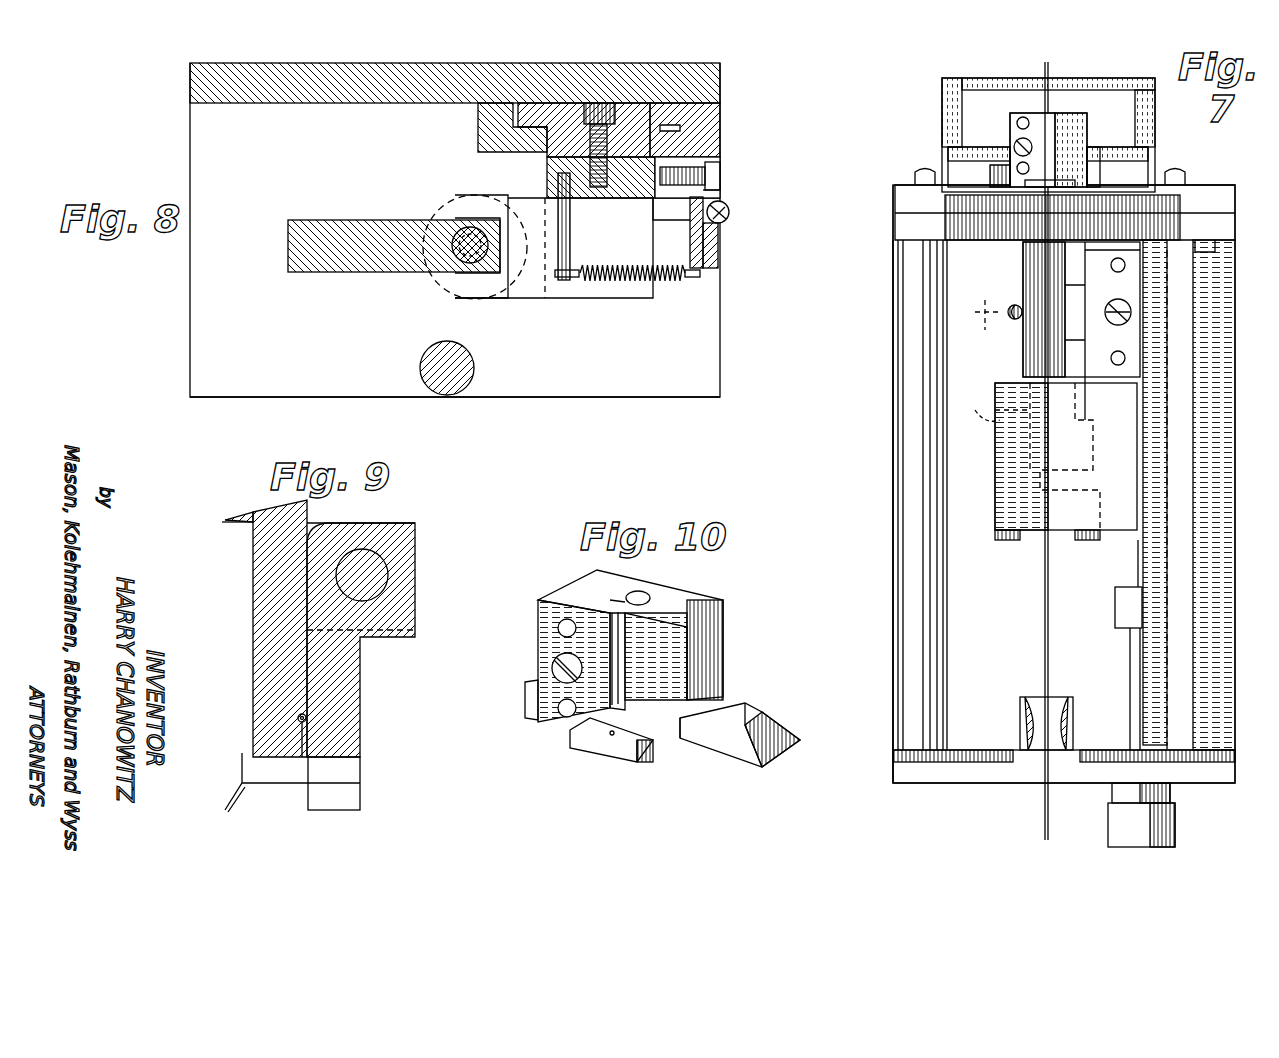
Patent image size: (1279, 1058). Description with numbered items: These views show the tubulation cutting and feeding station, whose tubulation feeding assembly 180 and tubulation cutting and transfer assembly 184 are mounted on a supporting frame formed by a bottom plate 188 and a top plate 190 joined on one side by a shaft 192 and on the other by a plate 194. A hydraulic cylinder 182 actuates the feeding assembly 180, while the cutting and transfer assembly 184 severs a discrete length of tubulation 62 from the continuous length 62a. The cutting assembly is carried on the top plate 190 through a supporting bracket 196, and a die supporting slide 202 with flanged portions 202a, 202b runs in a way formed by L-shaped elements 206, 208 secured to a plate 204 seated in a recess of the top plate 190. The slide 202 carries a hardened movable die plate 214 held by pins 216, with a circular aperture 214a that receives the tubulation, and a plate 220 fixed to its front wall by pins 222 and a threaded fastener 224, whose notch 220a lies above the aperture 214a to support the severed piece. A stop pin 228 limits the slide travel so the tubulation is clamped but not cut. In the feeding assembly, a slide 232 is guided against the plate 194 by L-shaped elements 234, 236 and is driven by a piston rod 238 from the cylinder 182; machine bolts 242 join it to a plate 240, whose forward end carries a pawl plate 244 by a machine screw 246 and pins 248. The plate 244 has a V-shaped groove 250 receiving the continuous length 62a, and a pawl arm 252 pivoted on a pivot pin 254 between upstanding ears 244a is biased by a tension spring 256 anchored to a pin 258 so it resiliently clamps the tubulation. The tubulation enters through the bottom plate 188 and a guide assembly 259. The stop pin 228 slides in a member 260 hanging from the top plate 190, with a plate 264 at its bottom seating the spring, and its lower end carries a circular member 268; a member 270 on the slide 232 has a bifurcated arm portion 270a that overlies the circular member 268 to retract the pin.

In FIG. 7, the tubulation 62 is at (1050, 68).
In FIG. 7, the continuous length of tubulation 62a is at (1045, 640).
In FIG. 9, the continuous length of tubulation 62a is at (308, 718).
In FIG. 8, the tubulation feeding assembly 180 is at (166, 330).
In FIG. 7, the tubulation feeding assembly 180 is at (878, 415).
In FIG. 7, the hydraulic cylinder 182 is at (1108, 825).
In FIG. 7, the tubulation cutting and transfer assembly 184 is at (910, 66).
In FIG. 8, the bottom plate 188 is at (545, 397).
In FIG. 7, the bottom plate 188 is at (908, 780).
In FIG. 7, the top plate 190 is at (897, 225).
In FIG. 8, the shaft 192 is at (447, 395).
In FIG. 7, the shaft 192 is at (900, 522).
In FIG. 8, the plate 194 is at (190, 76).
In FIG. 7, the plate 194 is at (1168, 375).
In FIG. 7, the supporting bracket 196 is at (975, 62).
In FIG. 7, the die supporting slide 202 is at (1083, 115).
In FIG. 10, the die supporting slide 202 is at (722, 627).
In FIG. 7, the flanged portion 202a is at (1003, 165).
In FIG. 10, the flanged portion 202a is at (525, 692).
In FIG. 7, the flanged portion 202b is at (1095, 155).
In FIG. 10, the flanged portion 202b is at (745, 712).
In FIG. 7, the plate 204 is at (950, 195).
In FIG. 7, the L-shaped element 206 is at (1148, 158).
In FIG. 7, the L-shaped element 208 is at (948, 156).
In FIG. 7, the plate 214 is at (1058, 182).
In FIG. 10, the plate 214 is at (582, 742).
In FIG. 10, the circular aperture 214a is at (612, 737).
In FIG. 10, the pins 216 is at (648, 598).
In FIG. 7, the plate 220 is at (1033, 113).
In FIG. 10, the plate 220 is at (548, 600).
In FIG. 10, the notch 220a is at (615, 612).
In FIG. 7, the pins 222 is at (1017, 123).
In FIG. 10, the pins 222 is at (558, 625).
In FIG. 7, the threaded fastener 224 is at (1014, 145).
In FIG. 10, the threaded fastener 224 is at (553, 663).
In FIG. 8, the stop pin 228 is at (456, 262).
In FIG. 8, the slide 232 is at (560, 102).
In FIG. 7, the slide 232 is at (1135, 567).
In FIG. 8, the L-shaped element 234 is at (720, 136).
In FIG. 7, the L-shaped element 234 is at (1195, 435).
In FIG. 8, the L-shaped element 236 is at (478, 140).
In FIG. 7, the piston rod 238 is at (1130, 660).
In FIG. 8, the plate 240 is at (627, 198).
In FIG. 9, the plate 240 is at (243, 522).
In FIG. 8, the machine bolts 242 is at (600, 108).
In FIG. 8, the plate 244 is at (690, 230).
In FIG. 7, the plate 244 is at (1088, 385).
In FIG. 9, the plate 244 is at (253, 612).
In FIG. 8, the upstanding ears 244a is at (722, 195).
In FIG. 7, the upstanding ears 244a is at (1090, 250).
In FIG. 9, the upstanding ears 244a is at (415, 530).
In FIG. 8, the machine screw 246 is at (722, 176).
In FIG. 7, the machine screw 246 is at (1130, 305).
In FIG. 7, the pins 248 is at (1123, 262).
In FIG. 9, the V-shaped groove 250 is at (298, 716).
In FIG. 8, the pawl arm 252 is at (718, 245).
In FIG. 7, the pawl arm 252 is at (1010, 308).
In FIG. 9, the pawl arm 252 is at (360, 695).
In FIG. 8, the pivot pin 254 is at (730, 212).
In FIG. 9, the pivot pin 254 is at (385, 578).
In FIG. 8, the tension spring 256 is at (640, 285).
In FIG. 7, the tension spring 256 is at (1012, 320).
In FIG. 9, the tension spring 256 is at (238, 795).
In FIG. 8, the pin 258 is at (565, 290).
In FIG. 7, the guide assembly 259 is at (1020, 706).
In FIG. 8, the member 260 is at (322, 268).
In FIG. 7, the member 260 is at (1023, 262).
In FIG. 7, the plate 264 is at (995, 490).
In FIG. 8, the circular member 268 is at (455, 205).
In FIG. 7, the circular member 268 is at (1015, 540).
In FIG. 8, the member 270 is at (605, 299).
In FIG. 8, the bifurcated arm portion 270a is at (508, 300).
In FIG. 7, the bifurcated arm portion 270a is at (991, 407).